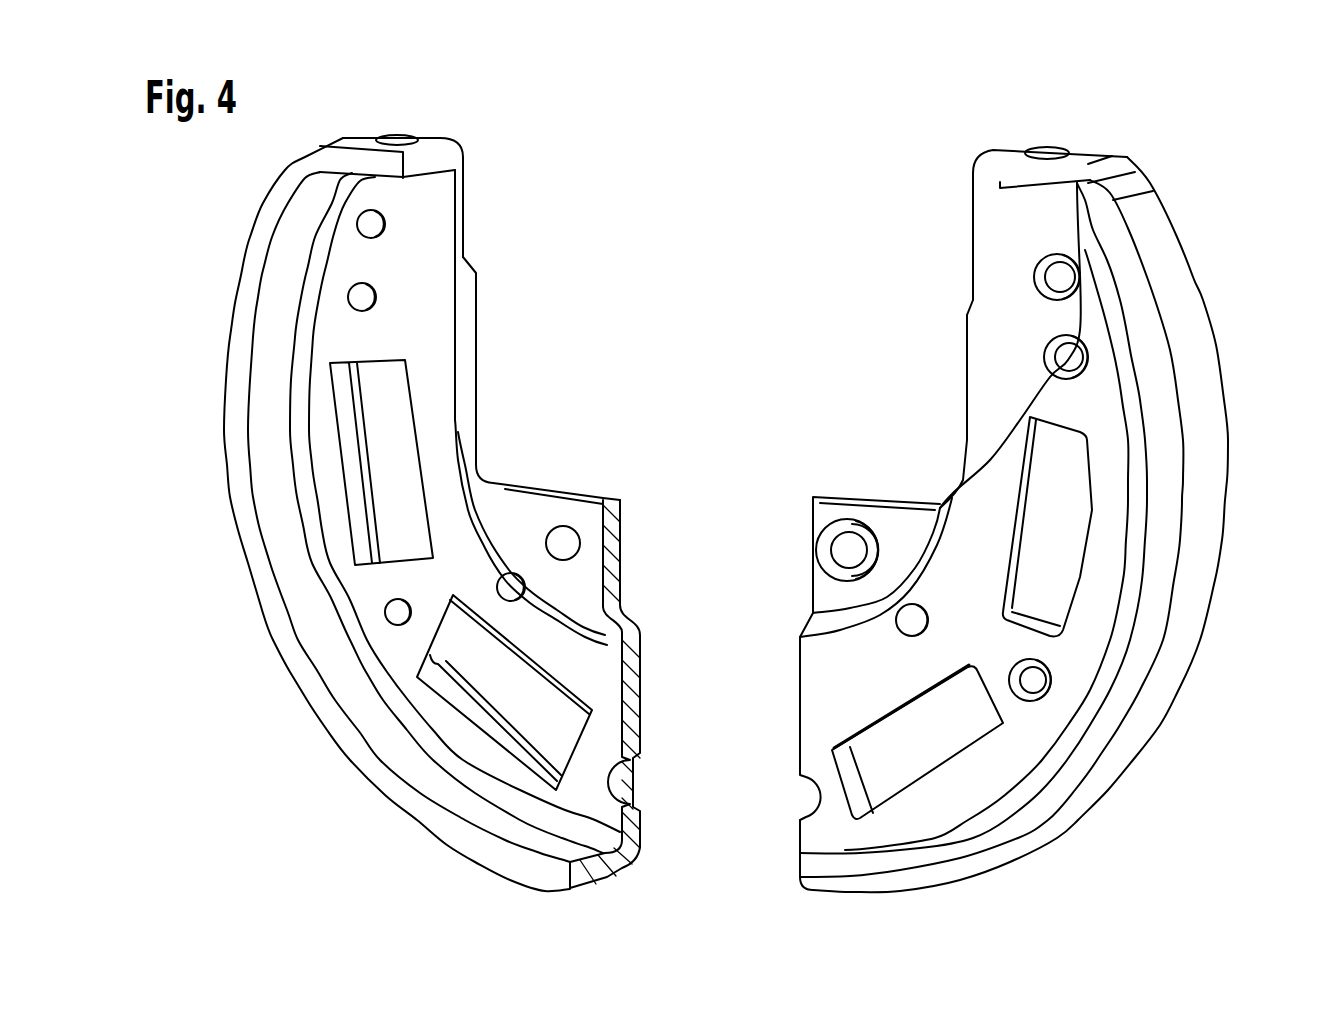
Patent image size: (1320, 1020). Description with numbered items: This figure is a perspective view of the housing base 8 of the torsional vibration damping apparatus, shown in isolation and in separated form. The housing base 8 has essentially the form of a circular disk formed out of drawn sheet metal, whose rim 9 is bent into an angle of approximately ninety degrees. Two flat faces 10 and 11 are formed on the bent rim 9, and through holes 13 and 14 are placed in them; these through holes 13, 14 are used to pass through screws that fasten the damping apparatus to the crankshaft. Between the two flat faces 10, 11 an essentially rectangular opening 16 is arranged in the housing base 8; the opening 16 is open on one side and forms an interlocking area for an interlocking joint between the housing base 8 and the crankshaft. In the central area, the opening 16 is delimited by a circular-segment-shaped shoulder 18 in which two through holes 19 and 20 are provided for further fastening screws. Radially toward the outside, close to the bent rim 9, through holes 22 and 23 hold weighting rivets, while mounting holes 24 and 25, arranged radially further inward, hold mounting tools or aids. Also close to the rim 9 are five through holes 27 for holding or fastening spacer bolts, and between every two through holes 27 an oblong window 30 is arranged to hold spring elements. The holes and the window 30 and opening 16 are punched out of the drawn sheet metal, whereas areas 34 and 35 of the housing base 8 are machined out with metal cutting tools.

The housing base 8 is at (830, 678).
The rim 9 is at (273, 297).
The flat face 10 is at (367, 132).
The flat face 11 is at (1080, 150).
The through hole 13 is at (398, 138).
The through hole 14 is at (1038, 148).
The rectangular opening 16 is at (470, 357).
The circular-segment-shaped shoulder 18 is at (590, 578).
The through hole 19 is at (563, 543).
The through hole 20 is at (845, 549).
The through hole 22 is at (371, 224).
The through hole 23 is at (1060, 280).
The mounting hole 24 is at (514, 580).
The mounting hole 25 is at (913, 613).
The through hole 27 is at (362, 297).
The oblong window 30 is at (387, 470).
The machined area 34 is at (993, 377).
The machined area 35 is at (380, 761).